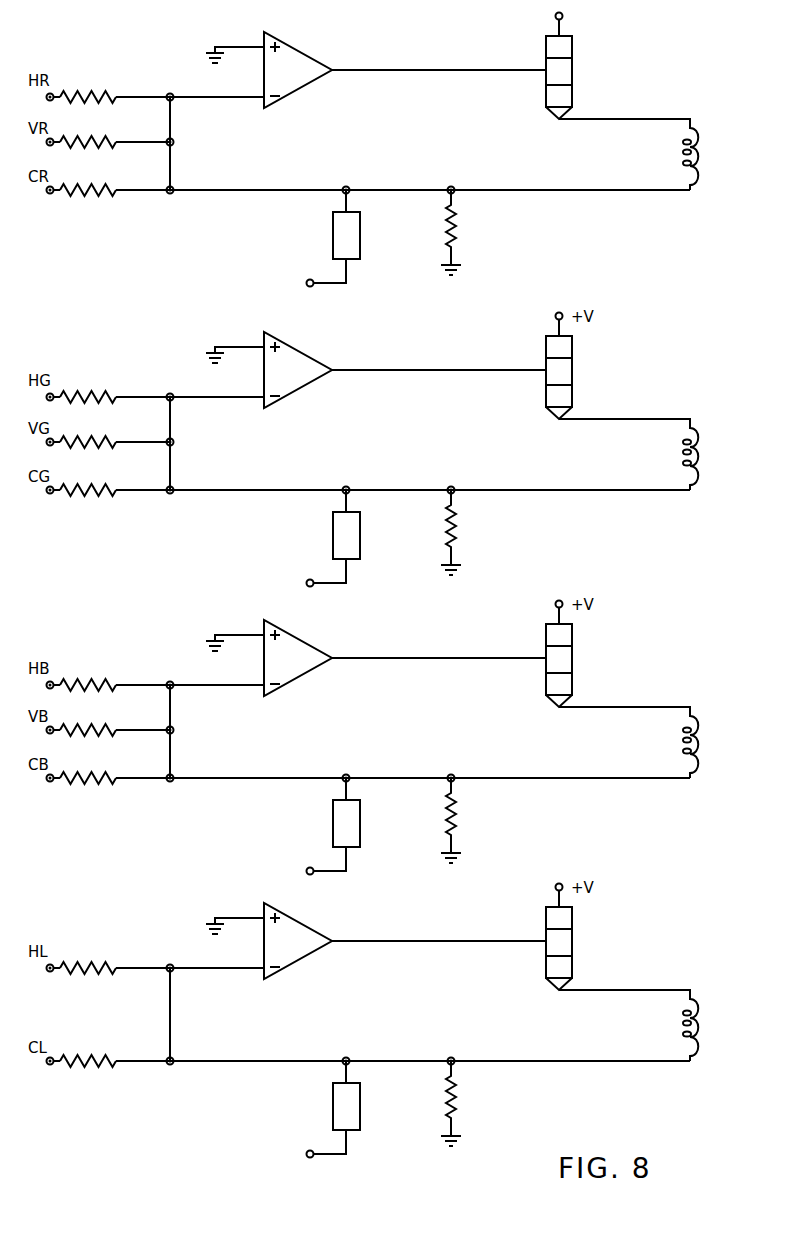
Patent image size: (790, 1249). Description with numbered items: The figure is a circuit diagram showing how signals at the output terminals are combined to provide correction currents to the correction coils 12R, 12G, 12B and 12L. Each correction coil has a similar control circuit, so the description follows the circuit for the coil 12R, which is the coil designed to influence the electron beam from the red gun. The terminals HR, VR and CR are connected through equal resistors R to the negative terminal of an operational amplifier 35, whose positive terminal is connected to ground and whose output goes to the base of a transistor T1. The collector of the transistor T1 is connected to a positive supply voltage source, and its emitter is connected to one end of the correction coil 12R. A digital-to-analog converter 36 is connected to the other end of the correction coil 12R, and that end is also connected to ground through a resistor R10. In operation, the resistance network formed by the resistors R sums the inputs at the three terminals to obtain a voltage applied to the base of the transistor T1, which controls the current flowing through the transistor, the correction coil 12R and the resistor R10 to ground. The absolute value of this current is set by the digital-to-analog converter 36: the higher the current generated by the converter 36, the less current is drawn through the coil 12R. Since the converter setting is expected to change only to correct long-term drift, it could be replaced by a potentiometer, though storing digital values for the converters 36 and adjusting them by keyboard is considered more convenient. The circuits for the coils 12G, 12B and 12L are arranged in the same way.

The operational amplifier 35 is at (286, 102).
The digital-to-analog converter 36 is at (360, 222).
The transistor T1 is at (573, 73).
The resistor R10 is at (471, 232).
The correction coil 12R is at (647, 154).
The correction coil 12G is at (648, 454).
The correction coil 12B is at (647, 742).
The correction coil 12L is at (646, 1025).
The resistors R is at (88, 128).